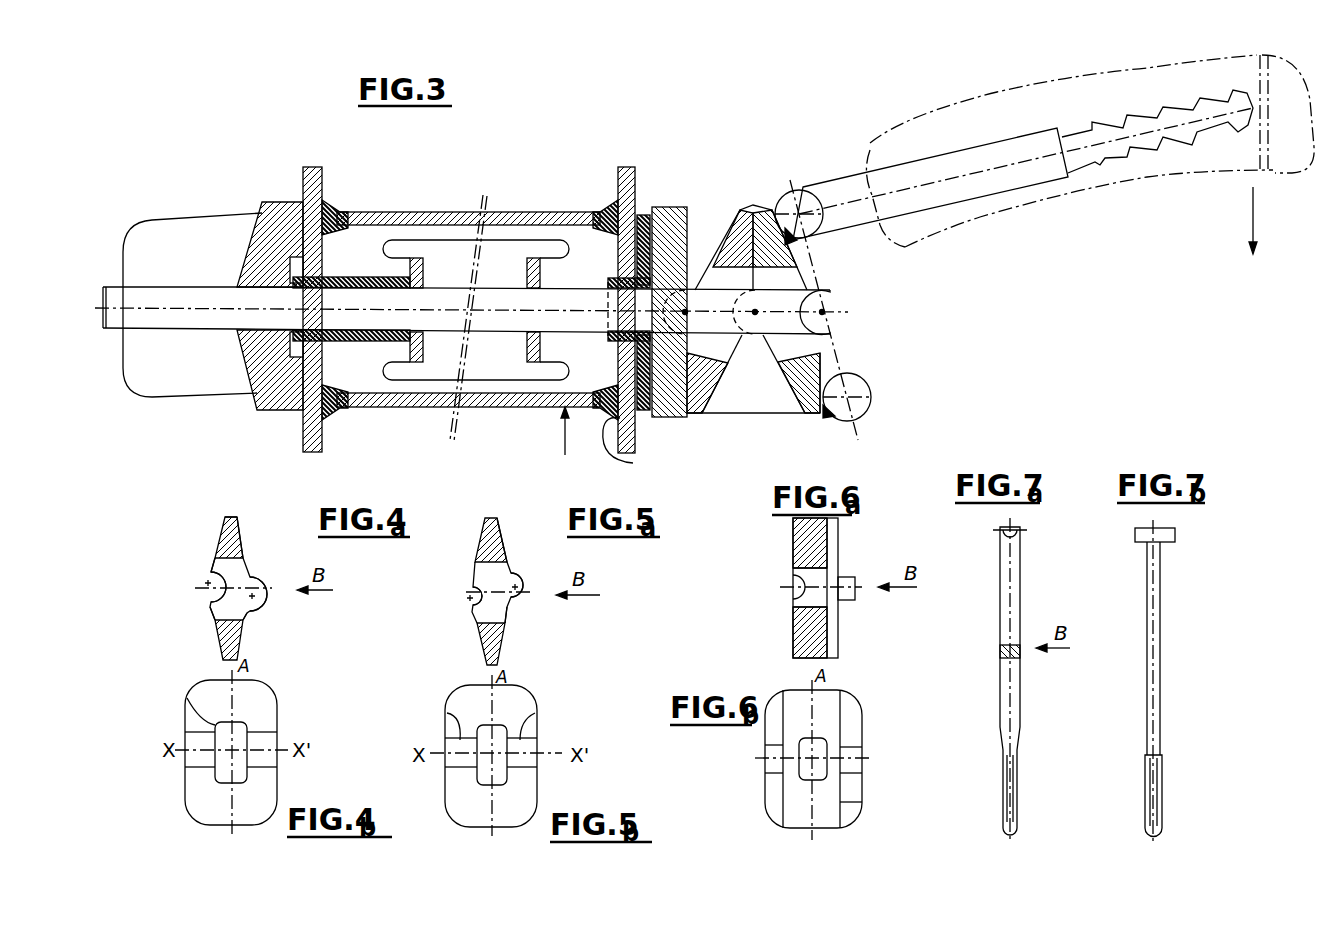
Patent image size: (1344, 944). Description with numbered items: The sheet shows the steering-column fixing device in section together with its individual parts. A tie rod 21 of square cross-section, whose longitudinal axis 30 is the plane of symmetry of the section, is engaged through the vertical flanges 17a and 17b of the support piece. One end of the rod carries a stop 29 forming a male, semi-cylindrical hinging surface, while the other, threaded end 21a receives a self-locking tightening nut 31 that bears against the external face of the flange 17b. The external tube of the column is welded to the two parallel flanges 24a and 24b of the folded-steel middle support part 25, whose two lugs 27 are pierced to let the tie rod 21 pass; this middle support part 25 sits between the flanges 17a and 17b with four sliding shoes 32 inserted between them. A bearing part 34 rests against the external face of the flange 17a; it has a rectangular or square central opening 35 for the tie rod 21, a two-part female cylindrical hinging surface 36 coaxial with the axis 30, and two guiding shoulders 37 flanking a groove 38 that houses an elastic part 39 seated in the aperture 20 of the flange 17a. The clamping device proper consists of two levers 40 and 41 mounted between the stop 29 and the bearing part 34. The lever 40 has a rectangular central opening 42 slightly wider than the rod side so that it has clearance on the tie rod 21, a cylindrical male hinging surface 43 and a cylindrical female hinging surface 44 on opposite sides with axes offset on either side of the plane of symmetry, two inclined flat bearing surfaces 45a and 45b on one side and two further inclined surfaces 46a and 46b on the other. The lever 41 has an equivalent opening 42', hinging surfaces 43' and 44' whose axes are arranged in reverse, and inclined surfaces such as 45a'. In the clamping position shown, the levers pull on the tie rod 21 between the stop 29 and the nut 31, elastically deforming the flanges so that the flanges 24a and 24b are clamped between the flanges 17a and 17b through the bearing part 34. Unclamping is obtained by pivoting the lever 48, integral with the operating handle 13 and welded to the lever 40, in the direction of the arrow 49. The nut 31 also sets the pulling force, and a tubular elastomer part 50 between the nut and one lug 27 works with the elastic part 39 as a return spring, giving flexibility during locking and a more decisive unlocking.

In FIG. 3, the operating handle 13 is at (1160, 91).
In FIG. 3, the vertical flange 17a is at (632, 170).
In FIG. 3, the vertical flange 17b is at (311, 170).
In FIG. 3, the aperture 20 is at (608, 340).
In FIG. 3, the tie rod 21 is at (498, 300).
In FIG. 7A, the tie rod 21 is at (1024, 702).
In FIG. 7B, the tie rod 21 is at (1166, 657).
In FIG. 3, the threaded end 21a is at (175, 286).
In FIG. 7A, the threaded end 21a is at (1018, 778).
In FIG. 3, the flange 24a is at (472, 408).
In FIG. 3, the flange 24b is at (508, 212).
In FIG. 3, the middle support part 25 is at (565, 443).
In FIG. 3, the lug 27 is at (416, 363).
In FIG. 3, the stop 29 is at (832, 292).
In FIG. 7B, the stop 29 is at (1170, 532).
In FIG. 3, the longitudinal axis 30 is at (180, 310).
In FIG. 7B, the longitudinal axis 30 is at (1160, 608).
In FIG. 3, the self-locking tightening nut 31 is at (262, 378).
In FIG. 3, the sliding shoe 32 is at (632, 448).
In FIG. 3, the bearing part 34 is at (668, 416).
In FIG. 6A, the bearing part 34 is at (815, 538).
In FIG. 6A, the central opening 35 is at (795, 616).
In FIG. 6B, the central opening 35 is at (828, 746).
In FIG. 6A, the female cylindrical hinging surface 36 is at (790, 586).
In FIG. 6A, the guiding shoulder 37 is at (855, 582).
In FIG. 6B, the guiding shoulder 37 is at (778, 763).
In FIG. 6B, the groove 38 is at (866, 802).
In FIG. 3, the elastic part 39 is at (648, 232).
In FIG. 3, the lever 40 is at (823, 358).
In FIG. 4A, the lever 40 is at (212, 536).
In FIG. 3, the lever 41 is at (707, 380).
In FIG. 5A, the lever 41 is at (476, 535).
In FIG. 4A, the central opening 42 is at (188, 587).
In FIG. 4B, the central opening 42 is at (193, 727).
In FIG. 5A, the opening 42' is at (534, 619).
In FIG. 4A, the cylindrical male hinging surface 43 is at (268, 565).
In FIG. 4B, the cylindrical male hinging surface 43 is at (214, 752).
In FIG. 5A, the hinging surface 43' is at (537, 568).
In FIG. 5B, the hinging surface 43' is at (488, 755).
In FIG. 4A, the cylindrical female hinging surface 44 is at (183, 552).
In FIG. 5A, the hinging surface 44' is at (460, 613).
In FIG. 4A, the inclined bearing surface 45a is at (270, 524).
In FIG. 5A, the inclined surface 45a' is at (527, 535).
In FIG. 4A, the inclined bearing surface 45b is at (246, 640).
In FIG. 4A, the inclined surface 46a is at (222, 520).
In FIG. 4A, the inclined surface 46b is at (214, 640).
In FIG. 3, the lever 48 is at (967, 163).
In FIG. 3, the arrow 49 is at (1253, 220).
In FIG. 3, the tubular elastic part 50 is at (384, 335).